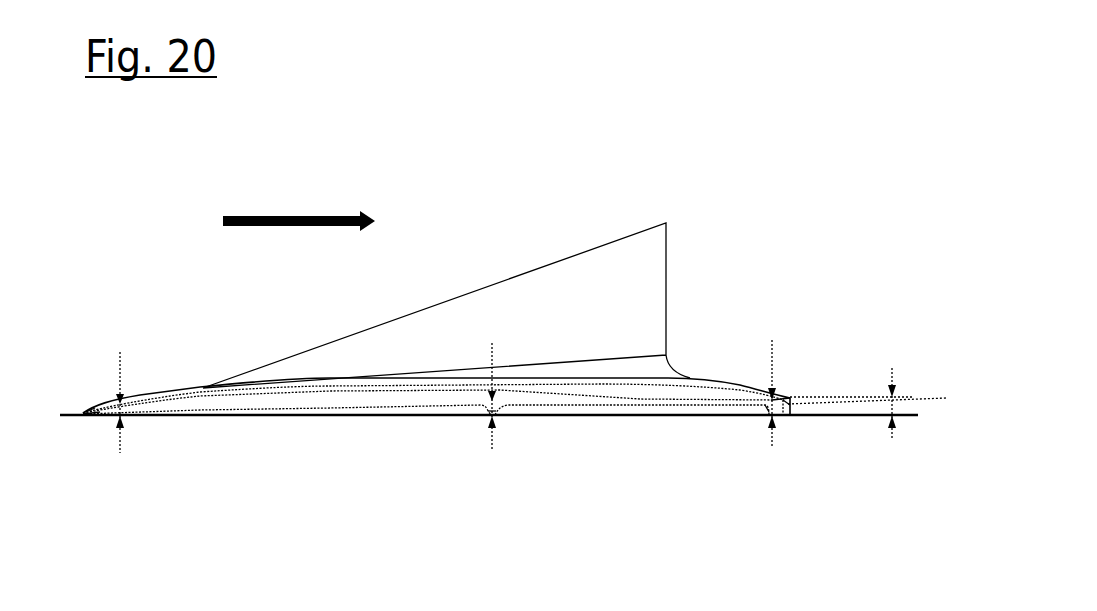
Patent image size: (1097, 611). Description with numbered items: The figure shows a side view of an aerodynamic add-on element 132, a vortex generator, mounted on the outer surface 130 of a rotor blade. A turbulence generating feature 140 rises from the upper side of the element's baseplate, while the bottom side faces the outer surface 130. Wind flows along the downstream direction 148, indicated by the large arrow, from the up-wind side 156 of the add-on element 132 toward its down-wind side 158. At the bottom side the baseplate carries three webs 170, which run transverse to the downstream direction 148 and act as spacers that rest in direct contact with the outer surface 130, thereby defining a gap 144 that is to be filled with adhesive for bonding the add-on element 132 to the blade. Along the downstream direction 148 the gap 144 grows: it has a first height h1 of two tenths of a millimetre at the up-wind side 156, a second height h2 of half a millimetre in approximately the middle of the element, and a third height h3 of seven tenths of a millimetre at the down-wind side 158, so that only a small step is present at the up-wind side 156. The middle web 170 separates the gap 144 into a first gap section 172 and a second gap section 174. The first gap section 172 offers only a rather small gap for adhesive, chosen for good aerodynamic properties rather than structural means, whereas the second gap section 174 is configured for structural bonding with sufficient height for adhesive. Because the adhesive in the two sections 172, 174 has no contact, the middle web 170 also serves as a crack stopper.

The outer surface 130 is at (840, 417).
The aerodynamic add-on element 132 is at (438, 323).
The turbulence generating feature 140 is at (542, 298).
The gap 144 is at (426, 464).
The downstream direction 148 is at (280, 217).
The up-wind side 156 is at (85, 397).
The down-wind side 158 is at (790, 385).
The web 170 is at (95, 418).
The first gap section 172 is at (310, 417).
The second gap section 174 is at (662, 417).
The first height h1 is at (120, 372).
The second height h2 is at (493, 430).
The third height h3 is at (772, 375).